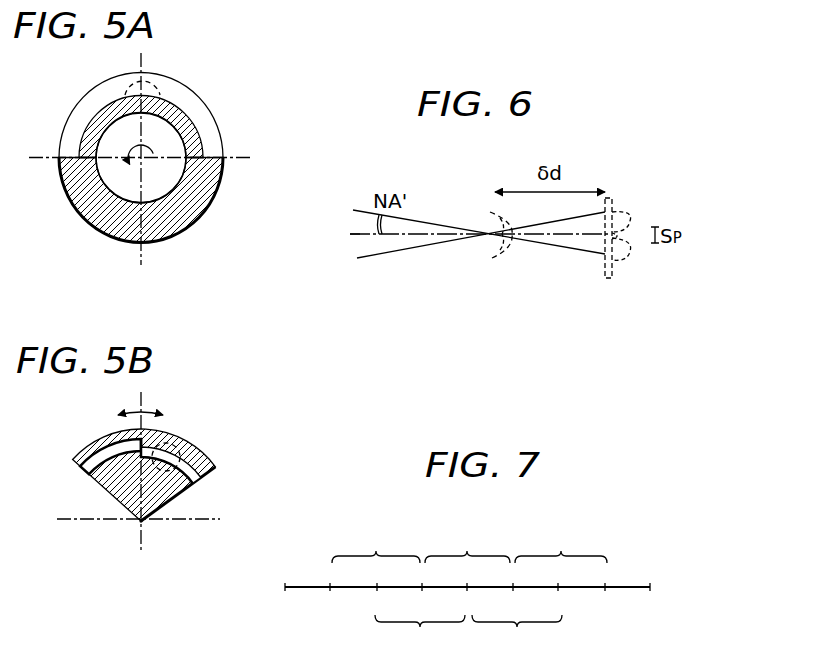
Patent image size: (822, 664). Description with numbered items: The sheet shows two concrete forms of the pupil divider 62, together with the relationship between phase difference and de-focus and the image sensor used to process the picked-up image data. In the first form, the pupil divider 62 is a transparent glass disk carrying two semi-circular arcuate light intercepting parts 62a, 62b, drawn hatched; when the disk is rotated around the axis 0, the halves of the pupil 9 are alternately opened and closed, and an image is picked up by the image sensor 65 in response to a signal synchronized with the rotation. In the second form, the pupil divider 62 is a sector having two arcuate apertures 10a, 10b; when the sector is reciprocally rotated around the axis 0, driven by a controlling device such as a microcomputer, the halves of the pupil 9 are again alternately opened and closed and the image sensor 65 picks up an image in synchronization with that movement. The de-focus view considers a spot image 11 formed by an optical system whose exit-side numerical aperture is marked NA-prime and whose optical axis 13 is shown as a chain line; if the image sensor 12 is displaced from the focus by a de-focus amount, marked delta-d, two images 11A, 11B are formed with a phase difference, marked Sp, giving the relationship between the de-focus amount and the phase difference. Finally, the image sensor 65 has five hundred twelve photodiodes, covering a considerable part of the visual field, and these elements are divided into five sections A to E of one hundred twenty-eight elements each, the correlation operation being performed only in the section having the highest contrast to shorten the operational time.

In FIG. 5A, the pupil divider 62 is at (227, 123).
In FIG. 5B, the pupil divider 62 is at (217, 452).
In FIG. 5A, the semi-circular arcuate light intercepting part 62a is at (110, 115).
In FIG. 5A, the semi-circular arcuate light intercepting part 62b is at (100, 227).
In FIG. 5A, the pupil 9 is at (155, 88).
In FIG. 5B, the pupil 9 is at (172, 433).
In FIG. 5A, the axis 0 is at (146, 166).
In FIG. 5B, the axis 0 is at (146, 523).
In FIG. 5B, the arcuate aperture 10a is at (100, 456).
In FIG. 5B, the arcuate aperture 10b is at (183, 481).
In FIG. 6, the spot image 11 is at (502, 244).
In FIG. 6, the image 11A is at (630, 253).
In FIG. 6, the image 11B is at (620, 213).
In FIG. 6, the image sensor 12 is at (616, 268).
In FIG. 6, the optical axis 13 is at (357, 237).
In FIG. 7, the image sensor 65 is at (637, 583).